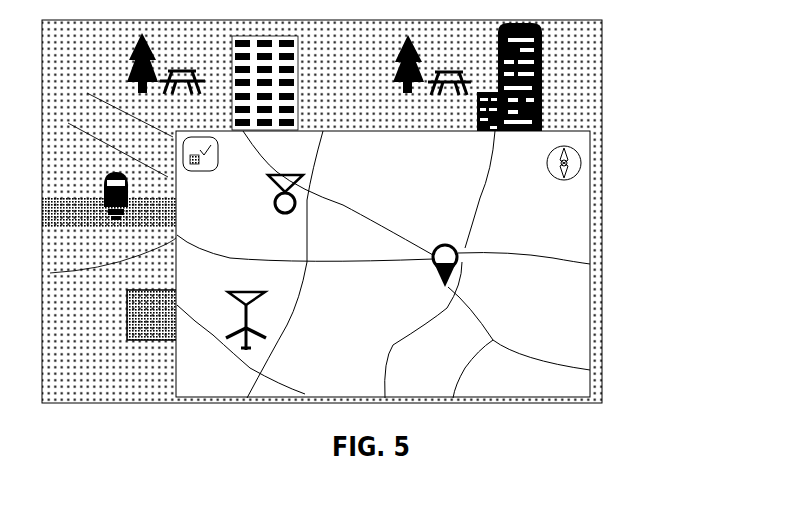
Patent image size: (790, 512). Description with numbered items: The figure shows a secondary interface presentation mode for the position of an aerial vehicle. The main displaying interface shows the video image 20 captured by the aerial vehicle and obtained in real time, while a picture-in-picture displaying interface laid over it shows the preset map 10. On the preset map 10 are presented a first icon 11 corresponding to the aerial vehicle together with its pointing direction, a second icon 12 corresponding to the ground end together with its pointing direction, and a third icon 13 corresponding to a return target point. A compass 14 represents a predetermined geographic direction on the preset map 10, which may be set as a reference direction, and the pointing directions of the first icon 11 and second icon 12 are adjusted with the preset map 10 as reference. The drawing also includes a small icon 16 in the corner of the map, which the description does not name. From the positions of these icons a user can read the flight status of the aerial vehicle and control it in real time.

The video image 20 is at (602, 58).
The preset map 10 is at (567, 282).
The settings icon 16 is at (218, 157).
The second icon 12 is at (297, 203).
The third icon 13 is at (462, 263).
The compass 14 is at (581, 160).
The first icon 11 is at (255, 318).